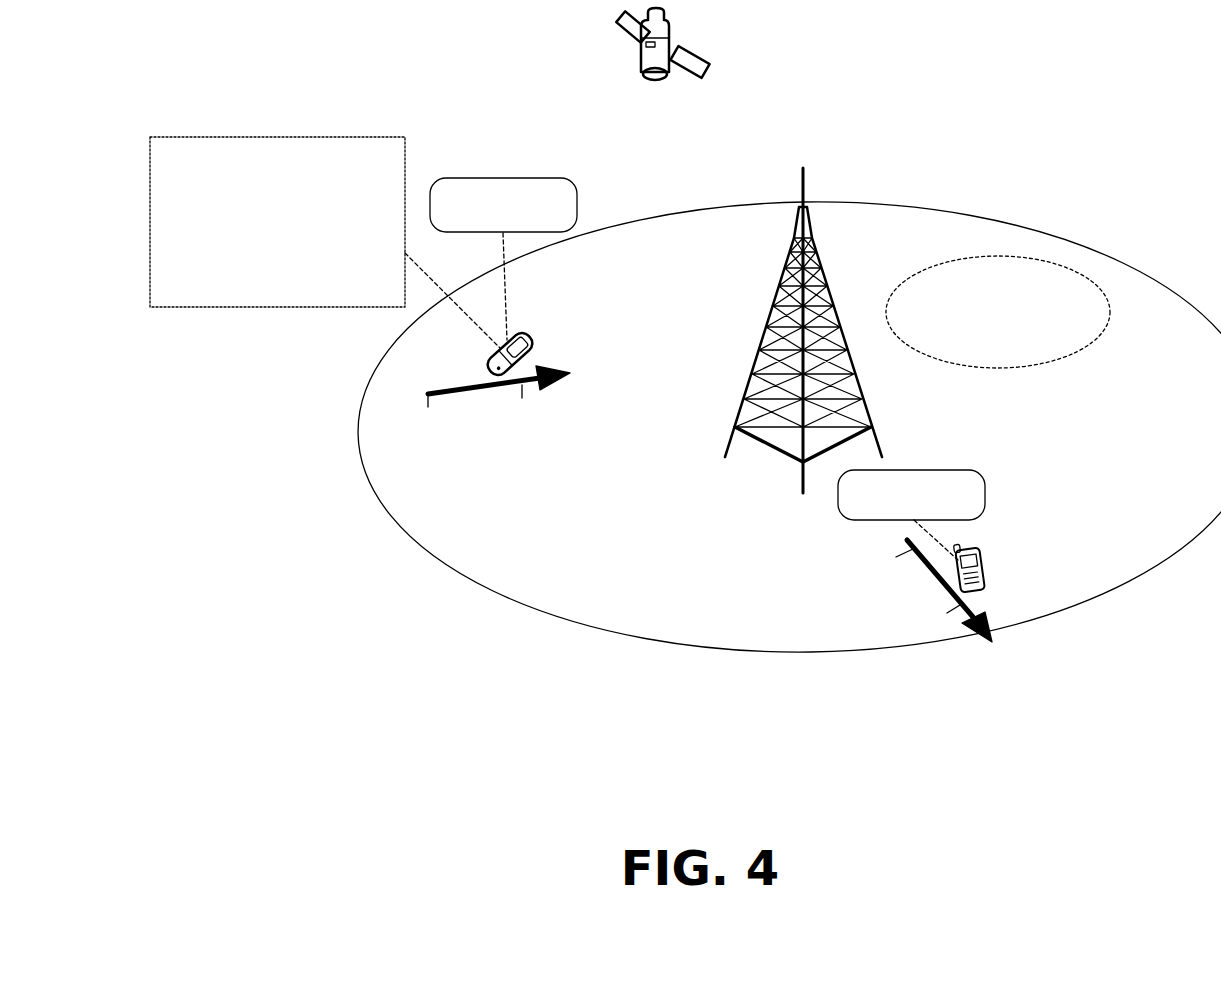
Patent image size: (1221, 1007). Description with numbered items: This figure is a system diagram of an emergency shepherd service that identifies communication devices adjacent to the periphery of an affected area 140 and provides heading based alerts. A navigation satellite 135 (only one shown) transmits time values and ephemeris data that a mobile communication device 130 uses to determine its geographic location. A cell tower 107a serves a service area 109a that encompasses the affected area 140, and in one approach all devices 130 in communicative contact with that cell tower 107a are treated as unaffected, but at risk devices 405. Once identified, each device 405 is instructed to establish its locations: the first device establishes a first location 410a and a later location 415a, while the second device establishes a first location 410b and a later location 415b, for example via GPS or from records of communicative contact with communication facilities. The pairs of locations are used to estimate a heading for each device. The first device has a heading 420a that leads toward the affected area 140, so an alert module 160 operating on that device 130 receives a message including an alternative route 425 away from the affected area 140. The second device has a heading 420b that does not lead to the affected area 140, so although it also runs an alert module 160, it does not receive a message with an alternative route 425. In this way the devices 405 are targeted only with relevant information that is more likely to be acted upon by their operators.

The service area 109a is at (609, 633).
The satellite 135 is at (662, 59).
The cell tower 107a is at (780, 293).
The affected area 140 is at (920, 350).
The alternative route 425 is at (388, 137).
The alert module 160 is at (707, 349).
The unaffected, but at risk device 405 is at (533, 337).
The mobile communication device 130 is at (472, 350).
The heading 420a is at (547, 385).
The heading 420b is at (982, 642).
The first location 410a is at (428, 430).
The location 415a is at (522, 410).
The first location 410b is at (888, 555).
The location 415b is at (937, 612).